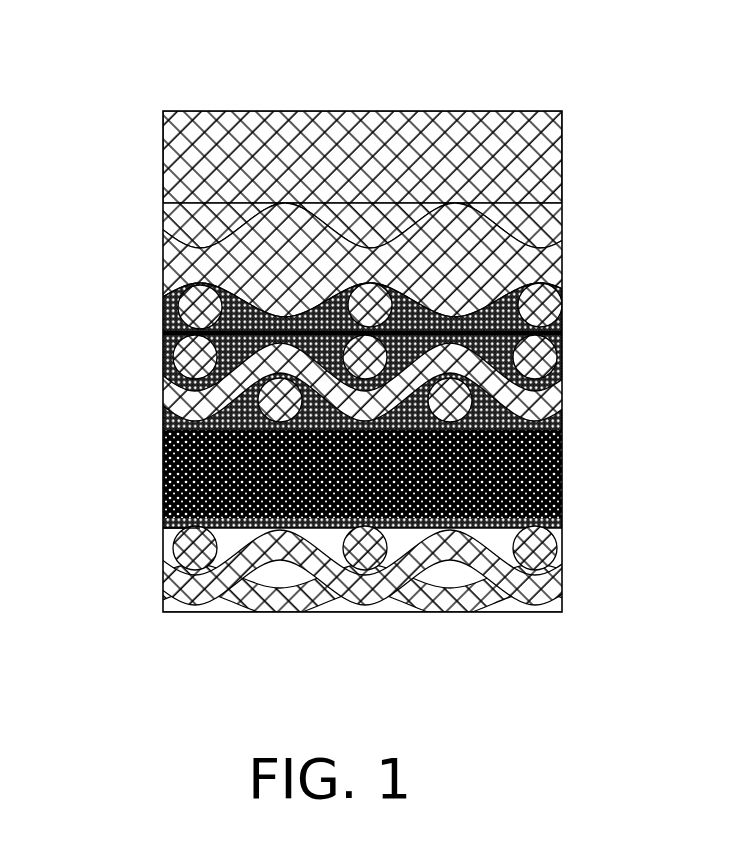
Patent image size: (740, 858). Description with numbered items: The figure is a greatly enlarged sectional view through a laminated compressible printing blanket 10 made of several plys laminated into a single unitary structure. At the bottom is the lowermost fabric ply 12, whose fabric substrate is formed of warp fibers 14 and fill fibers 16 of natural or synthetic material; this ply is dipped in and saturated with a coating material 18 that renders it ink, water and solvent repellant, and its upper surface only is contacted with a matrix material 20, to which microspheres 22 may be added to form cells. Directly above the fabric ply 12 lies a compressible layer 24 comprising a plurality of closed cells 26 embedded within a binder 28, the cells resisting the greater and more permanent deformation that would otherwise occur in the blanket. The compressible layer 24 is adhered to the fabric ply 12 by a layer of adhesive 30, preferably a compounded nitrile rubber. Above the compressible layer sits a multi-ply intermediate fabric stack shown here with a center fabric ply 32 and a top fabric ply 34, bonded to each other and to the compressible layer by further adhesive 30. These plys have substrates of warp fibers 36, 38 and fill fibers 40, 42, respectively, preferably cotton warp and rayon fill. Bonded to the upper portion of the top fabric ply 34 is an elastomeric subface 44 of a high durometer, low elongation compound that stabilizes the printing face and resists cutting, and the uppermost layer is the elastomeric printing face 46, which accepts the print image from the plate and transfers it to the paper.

The printing blanket 10 is at (366, 333).
The lowermost fabric ply 12 is at (366, 588).
The warp fibers 14 is at (190, 581).
The fill fibers 16 is at (170, 597).
The coating material 18 is at (253, 602).
The matrix material 20 is at (160, 533).
The microspheres 22 is at (562, 534).
The compressible layer 24 is at (368, 474).
The closed cells 26 is at (165, 452).
The binder 28 is at (163, 493).
The adhesive 30 is at (562, 334).
The center fabric ply 32 is at (366, 382).
The top fabric ply 34 is at (366, 268).
The warp fibers 36 is at (356, 378).
The warp fibers 38 is at (187, 306).
The fill fibers 40 is at (175, 388).
The fill fibers 42 is at (185, 262).
The elastomeric subface 44 is at (185, 216).
The elastomeric printing face 46 is at (562, 178).